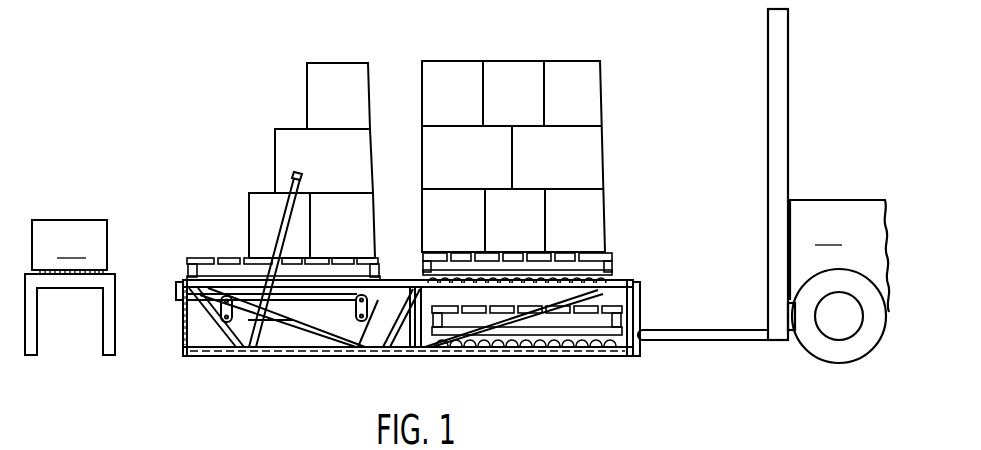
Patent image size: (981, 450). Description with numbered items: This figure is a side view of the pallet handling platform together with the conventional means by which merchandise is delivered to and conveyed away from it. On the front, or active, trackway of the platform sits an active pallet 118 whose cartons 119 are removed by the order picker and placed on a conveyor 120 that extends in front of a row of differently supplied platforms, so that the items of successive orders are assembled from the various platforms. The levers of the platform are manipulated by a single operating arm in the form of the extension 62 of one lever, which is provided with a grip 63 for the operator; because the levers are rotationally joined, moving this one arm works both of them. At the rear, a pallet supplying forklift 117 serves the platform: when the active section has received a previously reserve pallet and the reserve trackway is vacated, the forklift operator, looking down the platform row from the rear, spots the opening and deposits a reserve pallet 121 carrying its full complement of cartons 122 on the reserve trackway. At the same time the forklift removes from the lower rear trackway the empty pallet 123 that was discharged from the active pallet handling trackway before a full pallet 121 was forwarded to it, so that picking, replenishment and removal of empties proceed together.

The extension 62 is at (284, 223).
The grip 63 is at (305, 182).
The forklift 117 is at (763, 186).
The active pallet 118 is at (190, 257).
The carton 119 is at (283, 150).
The conveyor 120 is at (115, 318).
The reserve pallet 121 is at (612, 264).
The cartons 122 is at (602, 151).
The empty pallet 123 is at (607, 327).